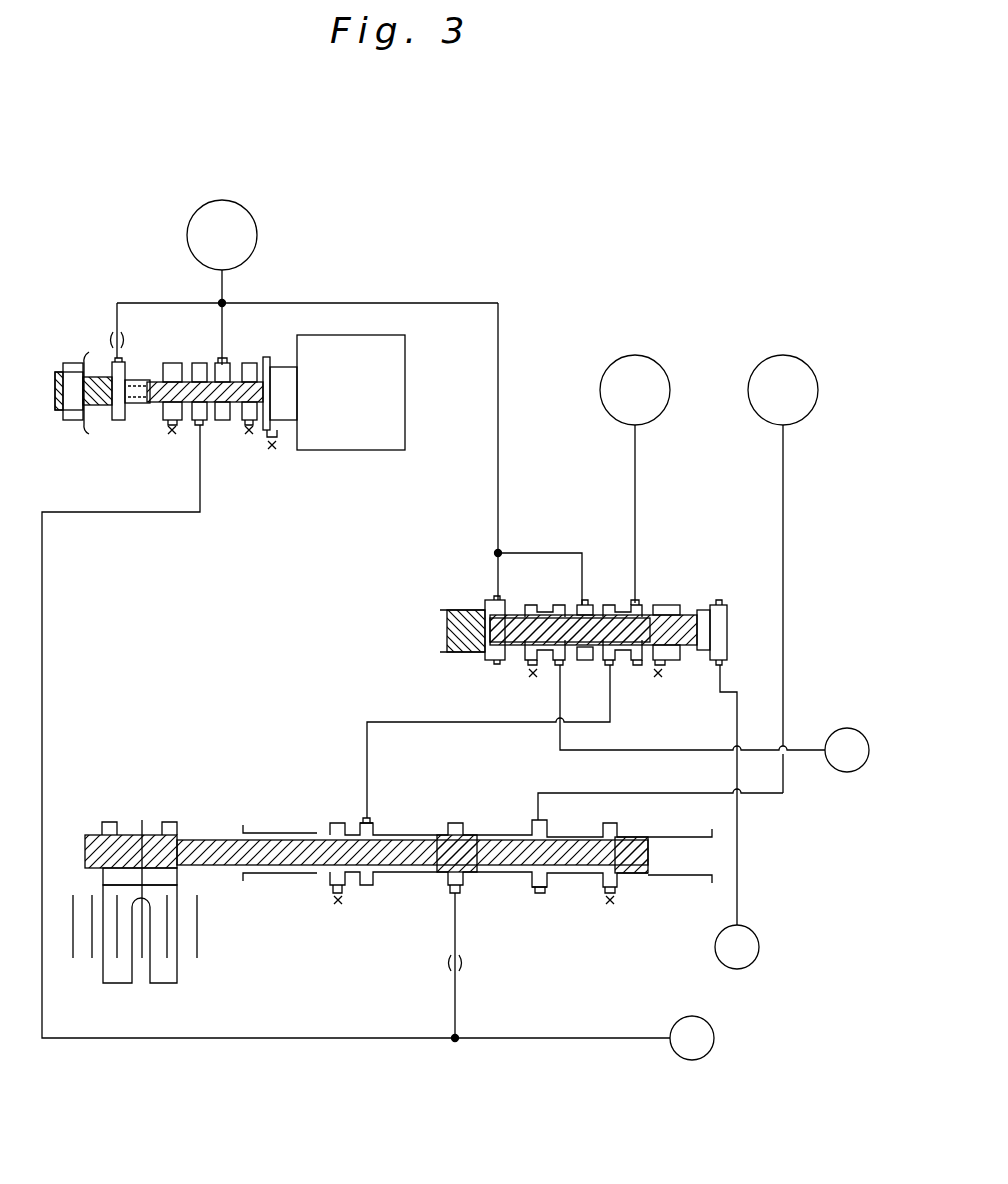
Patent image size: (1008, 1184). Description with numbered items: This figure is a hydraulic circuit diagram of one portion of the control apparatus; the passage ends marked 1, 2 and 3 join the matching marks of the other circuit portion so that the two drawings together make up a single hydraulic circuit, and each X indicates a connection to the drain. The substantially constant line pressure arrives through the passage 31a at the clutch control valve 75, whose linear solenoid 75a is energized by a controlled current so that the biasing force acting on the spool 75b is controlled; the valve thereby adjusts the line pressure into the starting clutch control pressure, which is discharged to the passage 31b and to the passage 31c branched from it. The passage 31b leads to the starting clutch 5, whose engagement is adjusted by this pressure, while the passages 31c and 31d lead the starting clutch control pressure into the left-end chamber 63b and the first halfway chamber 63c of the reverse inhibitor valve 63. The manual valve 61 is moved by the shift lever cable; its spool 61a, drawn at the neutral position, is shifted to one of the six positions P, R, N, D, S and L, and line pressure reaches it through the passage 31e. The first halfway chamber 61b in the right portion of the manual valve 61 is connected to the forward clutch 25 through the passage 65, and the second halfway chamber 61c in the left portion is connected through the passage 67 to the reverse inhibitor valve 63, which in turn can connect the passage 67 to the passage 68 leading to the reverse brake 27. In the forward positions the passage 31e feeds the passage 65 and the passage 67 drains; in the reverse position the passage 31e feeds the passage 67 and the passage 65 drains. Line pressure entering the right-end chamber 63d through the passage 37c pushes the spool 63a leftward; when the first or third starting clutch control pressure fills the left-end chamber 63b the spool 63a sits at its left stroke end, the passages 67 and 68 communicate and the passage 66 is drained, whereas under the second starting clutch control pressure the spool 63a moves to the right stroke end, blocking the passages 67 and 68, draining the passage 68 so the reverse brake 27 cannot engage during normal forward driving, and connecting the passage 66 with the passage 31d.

The passage end mark 1 is at (692, 1038).
The passage end mark 2 is at (737, 947).
The passage end mark 3 is at (847, 750).
The starting clutch 5 is at (211, 251).
The forward clutch 25 is at (766, 406).
The reverse brake 27 is at (618, 406).
The hydraulic passage 31a is at (522, 1040).
The hydraulic passage 31b is at (226, 283).
The hydraulic passage 31c is at (506, 325).
The hydraulic passage 31d is at (543, 553).
The hydraulic passage 31e is at (458, 925).
The hydraulic passage 37c is at (740, 833).
The manual valve 61 is at (387, 881).
The spool of the manual valve 61a is at (397, 860).
The first halfway chamber 61b is at (540, 893).
The second halfway chamber 61c is at (370, 820).
The reverse inhibitor valve 63 is at (606, 607).
The spool of the reverse inhibitor valve 63a is at (506, 617).
The left-end chamber 63b is at (497, 660).
The first halfway chamber 63c is at (586, 599).
The right-end chamber 63d is at (727, 624).
The passage 65 is at (786, 499).
The passage 66 is at (638, 750).
The passage 67 is at (443, 722).
The passage 68 is at (637, 460).
The clutch control valve 75 is at (179, 421).
The linear solenoid 75a is at (377, 409).
The spool 75b is at (190, 421).